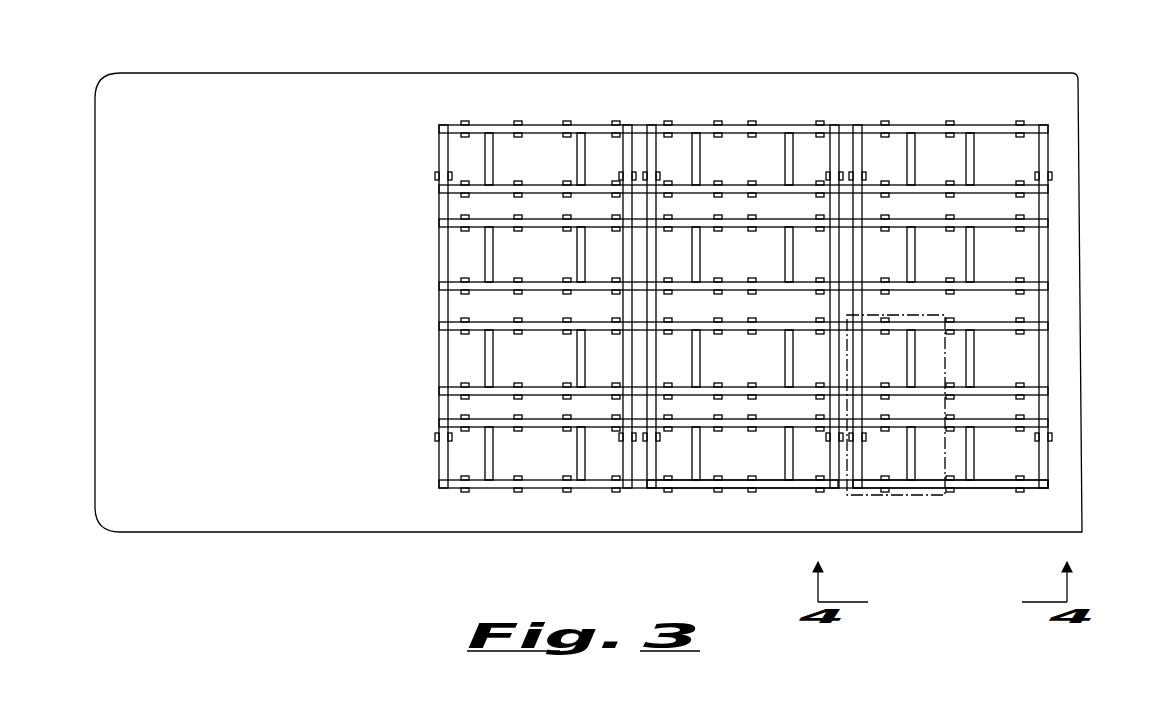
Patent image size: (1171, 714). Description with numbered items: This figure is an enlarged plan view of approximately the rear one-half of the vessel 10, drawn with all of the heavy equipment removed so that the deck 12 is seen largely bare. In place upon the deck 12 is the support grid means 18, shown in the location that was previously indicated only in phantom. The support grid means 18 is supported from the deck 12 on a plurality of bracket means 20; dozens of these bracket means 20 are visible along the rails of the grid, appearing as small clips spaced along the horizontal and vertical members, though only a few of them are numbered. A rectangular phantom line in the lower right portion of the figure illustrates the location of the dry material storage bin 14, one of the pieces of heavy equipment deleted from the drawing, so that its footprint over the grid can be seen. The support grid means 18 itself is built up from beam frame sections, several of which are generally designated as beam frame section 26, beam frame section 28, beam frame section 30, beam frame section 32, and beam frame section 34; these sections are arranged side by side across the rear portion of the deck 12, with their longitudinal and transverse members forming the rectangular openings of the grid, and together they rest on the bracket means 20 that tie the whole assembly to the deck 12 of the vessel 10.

The vessel 10 is at (294, 70).
The deck 12 is at (183, 512).
The dry material storage bin 14 is at (880, 497).
The support grid means 18 is at (781, 331).
The bracket means 20 is at (465, 492).
The beam frame section 26 is at (1051, 367).
The beam frame section 28 is at (1006, 320).
The beam frame section 30 is at (986, 492).
The beam frame section 32 is at (827, 455).
The beam frame section 34 is at (736, 492).